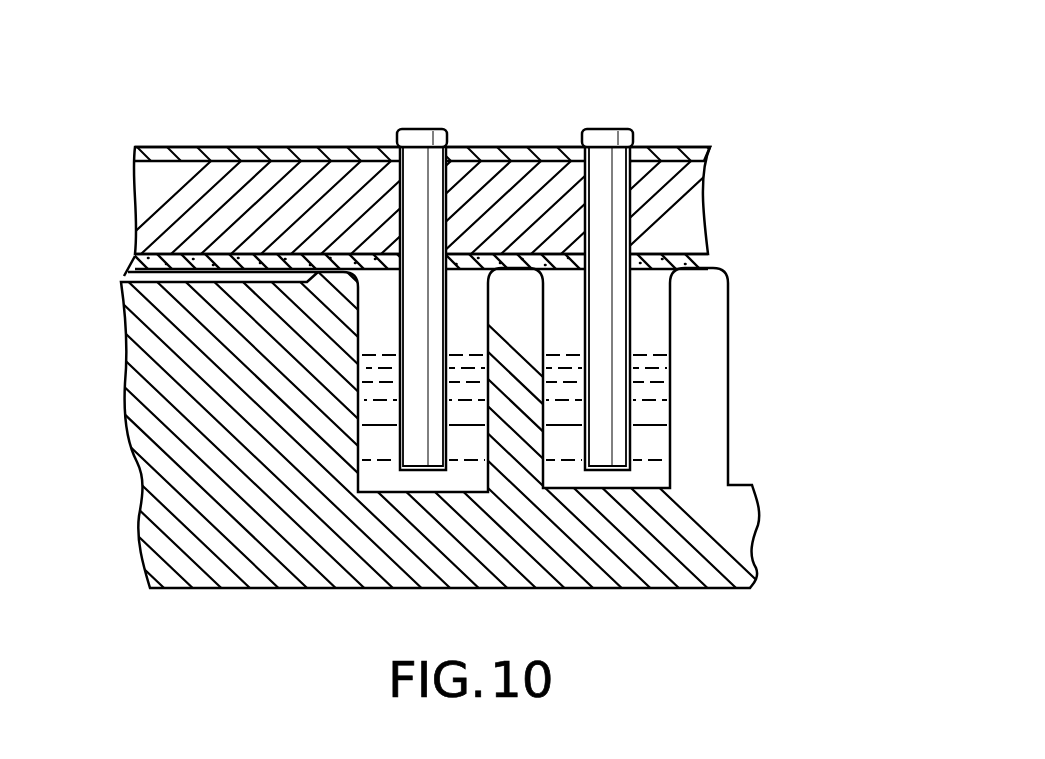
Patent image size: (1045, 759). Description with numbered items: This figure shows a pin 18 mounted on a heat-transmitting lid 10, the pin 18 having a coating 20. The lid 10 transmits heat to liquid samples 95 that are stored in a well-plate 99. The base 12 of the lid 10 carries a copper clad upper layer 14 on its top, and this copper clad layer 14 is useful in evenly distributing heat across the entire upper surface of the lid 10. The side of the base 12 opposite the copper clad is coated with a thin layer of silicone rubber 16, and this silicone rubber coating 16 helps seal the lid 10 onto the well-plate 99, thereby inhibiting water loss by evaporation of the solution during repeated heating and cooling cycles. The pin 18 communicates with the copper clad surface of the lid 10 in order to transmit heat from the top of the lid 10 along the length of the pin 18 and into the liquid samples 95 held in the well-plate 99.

The lid 10 is at (362, 78).
The base 12 is at (705, 212).
The copper clad upper layer 14 is at (691, 147).
The silicone rubber coating 16 is at (708, 258).
The pin 18 is at (410, 283).
The coating 20 is at (397, 340).
The liquid samples 95 is at (397, 423).
The well-plate 99 is at (265, 588).